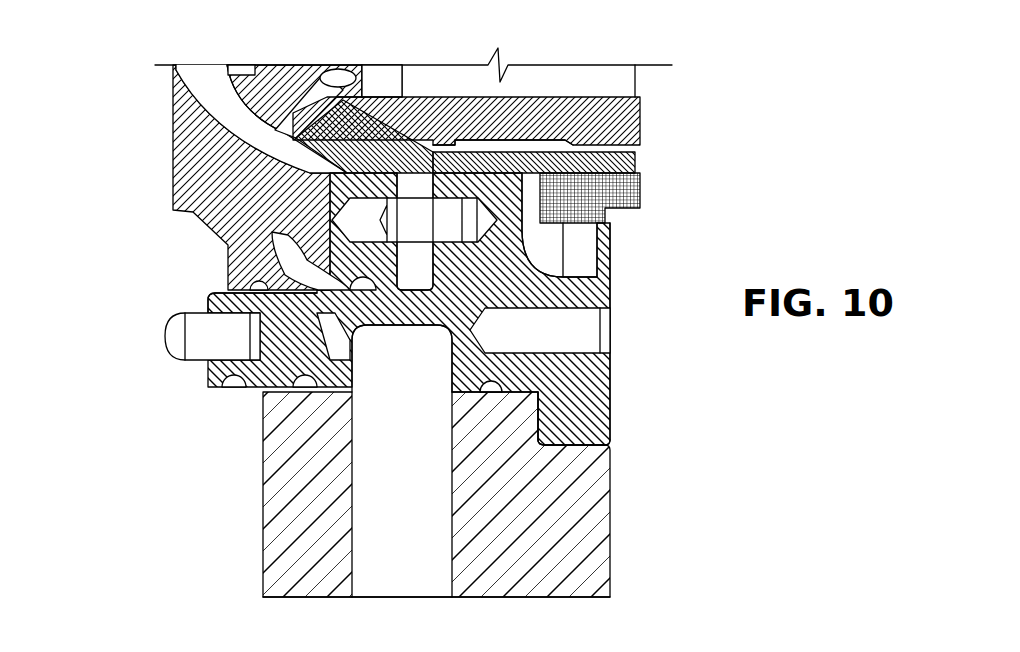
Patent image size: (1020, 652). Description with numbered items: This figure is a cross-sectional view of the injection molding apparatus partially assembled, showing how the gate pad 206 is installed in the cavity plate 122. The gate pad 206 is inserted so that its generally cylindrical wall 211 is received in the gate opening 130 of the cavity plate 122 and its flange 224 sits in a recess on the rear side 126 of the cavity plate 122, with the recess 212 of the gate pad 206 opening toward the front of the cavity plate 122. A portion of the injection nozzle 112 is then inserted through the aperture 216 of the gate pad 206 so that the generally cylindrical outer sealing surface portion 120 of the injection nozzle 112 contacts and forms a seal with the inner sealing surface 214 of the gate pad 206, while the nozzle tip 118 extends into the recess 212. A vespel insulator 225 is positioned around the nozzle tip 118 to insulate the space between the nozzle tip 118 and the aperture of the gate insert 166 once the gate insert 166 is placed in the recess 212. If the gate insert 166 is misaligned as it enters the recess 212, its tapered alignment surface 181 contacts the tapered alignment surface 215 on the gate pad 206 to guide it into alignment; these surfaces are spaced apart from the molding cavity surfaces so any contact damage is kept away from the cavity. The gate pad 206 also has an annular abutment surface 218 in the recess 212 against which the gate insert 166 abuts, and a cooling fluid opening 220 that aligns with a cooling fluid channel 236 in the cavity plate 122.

The injection nozzle 112 is at (615, 124).
The nozzle tip 118 is at (296, 70).
The outer sealing surface portion 120 is at (517, 178).
The cavity plate 122 is at (592, 532).
The rear side 126 is at (630, 576).
The gate opening 130 is at (350, 316).
The gate insert 166 is at (213, 153).
The tapered alignment surface 181 is at (405, 292).
The gate pad 206 is at (592, 396).
The generally cylindrical wall 211 is at (207, 372).
The recess 212 is at (285, 257).
The inner sealing surface 214 is at (480, 172).
The tapered alignment surface 215 is at (208, 294).
The aperture 216 is at (549, 116).
The abutment surface 218 is at (430, 263).
The cooling fluid opening 220 is at (381, 372).
The flange 224 is at (590, 434).
The vespel insulator 225 is at (325, 153).
The cooling fluid channel 236 is at (392, 580).